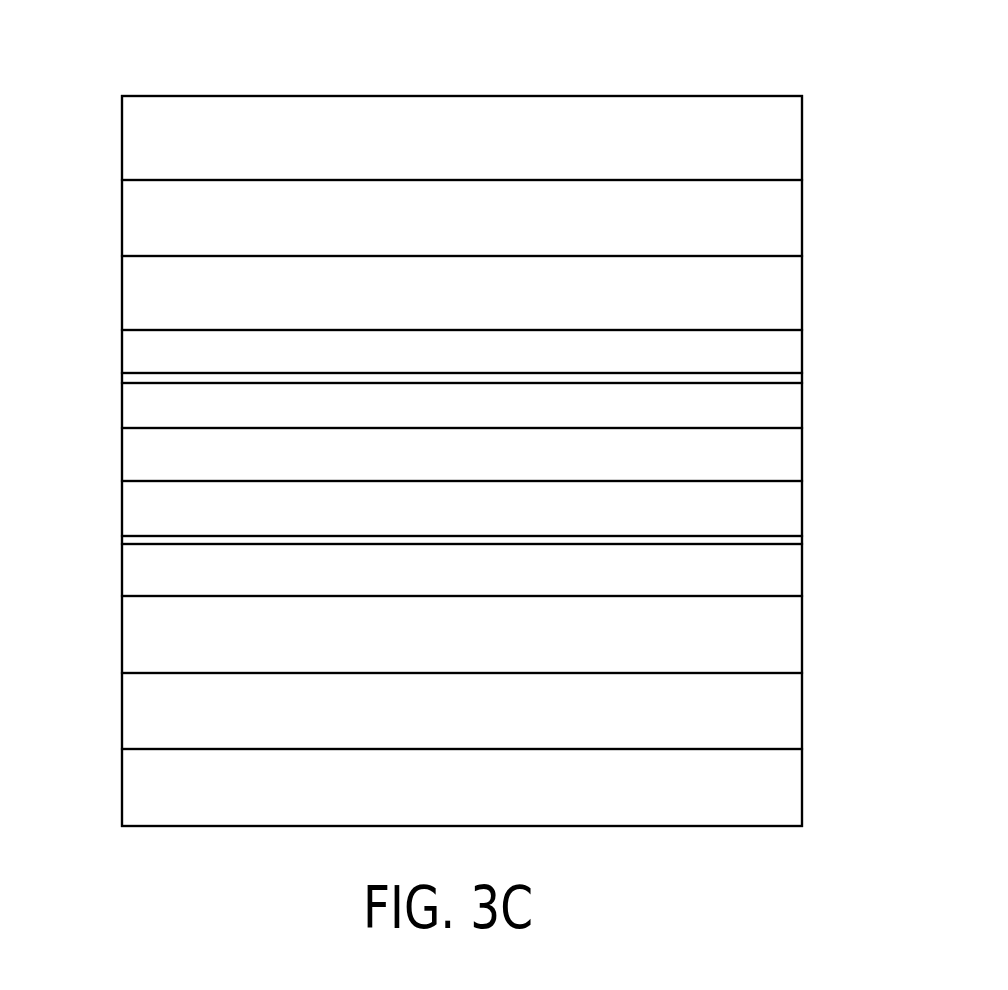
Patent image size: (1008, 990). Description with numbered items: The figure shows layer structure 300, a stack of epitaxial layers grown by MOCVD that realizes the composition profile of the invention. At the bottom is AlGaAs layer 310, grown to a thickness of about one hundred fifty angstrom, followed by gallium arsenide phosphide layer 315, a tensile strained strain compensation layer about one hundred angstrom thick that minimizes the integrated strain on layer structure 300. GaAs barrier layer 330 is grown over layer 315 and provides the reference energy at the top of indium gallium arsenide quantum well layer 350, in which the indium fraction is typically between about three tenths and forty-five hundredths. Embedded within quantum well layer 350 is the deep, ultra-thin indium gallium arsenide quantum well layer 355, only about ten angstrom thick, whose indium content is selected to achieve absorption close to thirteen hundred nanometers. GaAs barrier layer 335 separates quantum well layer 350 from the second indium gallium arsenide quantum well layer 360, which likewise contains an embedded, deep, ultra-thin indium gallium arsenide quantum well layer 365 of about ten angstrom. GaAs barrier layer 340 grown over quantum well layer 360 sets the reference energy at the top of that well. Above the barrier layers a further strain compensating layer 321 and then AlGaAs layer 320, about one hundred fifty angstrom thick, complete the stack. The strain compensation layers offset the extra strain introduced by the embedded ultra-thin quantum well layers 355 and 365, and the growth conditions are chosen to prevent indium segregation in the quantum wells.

The layer structure 300 is at (511, 46).
The AlGaAs layer 310 is at (796, 794).
The GaAs(1-z)Pz layer 315 is at (796, 710).
The AlGaAs layer 320 is at (796, 140).
The upper layer 321 is at (796, 226).
The GaAs barrier layer 330 is at (796, 638).
The GaAs barrier layer 335 is at (796, 454).
The GaAs barrier layer 340 is at (796, 296).
The InyGa(1-y)As quantum well layer 350 is at (796, 503).
The embedded, deep, ultra-thin InxGa(1-x)As quantum well layer 355 is at (128, 542).
The InyGa(1-y)As quantum well layer 360 is at (796, 353).
The embedded, deep, ultra-thin InxGa(1-x)As quantum well layer 365 is at (128, 381).